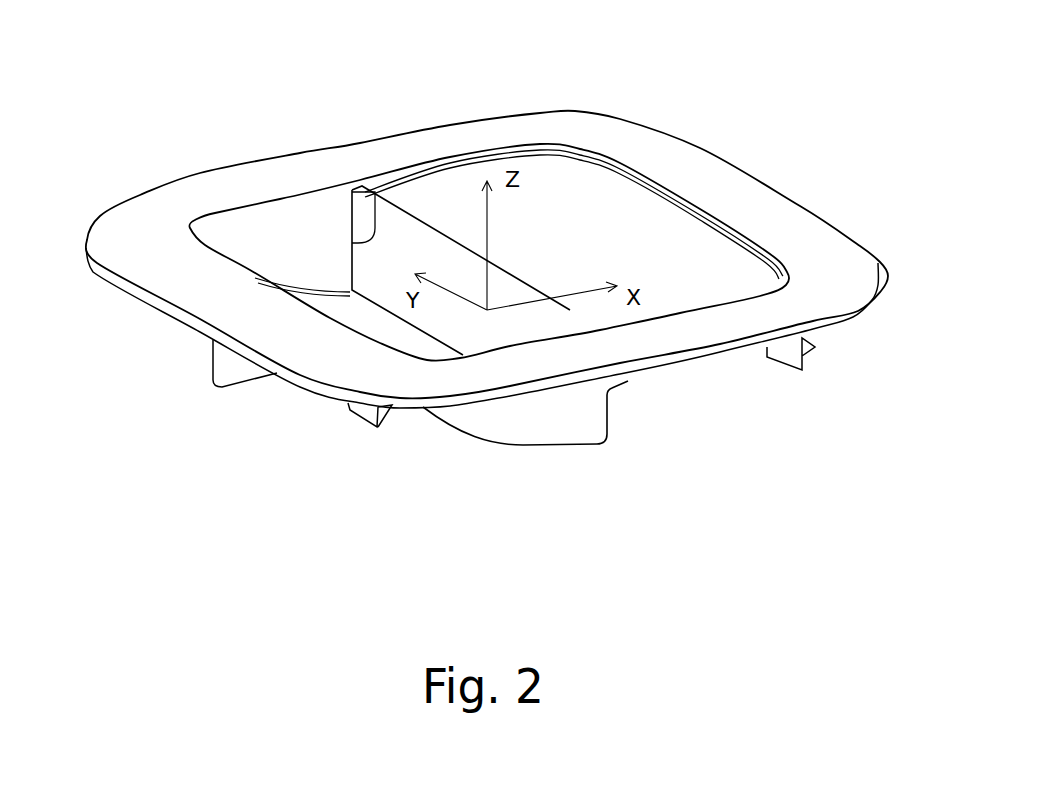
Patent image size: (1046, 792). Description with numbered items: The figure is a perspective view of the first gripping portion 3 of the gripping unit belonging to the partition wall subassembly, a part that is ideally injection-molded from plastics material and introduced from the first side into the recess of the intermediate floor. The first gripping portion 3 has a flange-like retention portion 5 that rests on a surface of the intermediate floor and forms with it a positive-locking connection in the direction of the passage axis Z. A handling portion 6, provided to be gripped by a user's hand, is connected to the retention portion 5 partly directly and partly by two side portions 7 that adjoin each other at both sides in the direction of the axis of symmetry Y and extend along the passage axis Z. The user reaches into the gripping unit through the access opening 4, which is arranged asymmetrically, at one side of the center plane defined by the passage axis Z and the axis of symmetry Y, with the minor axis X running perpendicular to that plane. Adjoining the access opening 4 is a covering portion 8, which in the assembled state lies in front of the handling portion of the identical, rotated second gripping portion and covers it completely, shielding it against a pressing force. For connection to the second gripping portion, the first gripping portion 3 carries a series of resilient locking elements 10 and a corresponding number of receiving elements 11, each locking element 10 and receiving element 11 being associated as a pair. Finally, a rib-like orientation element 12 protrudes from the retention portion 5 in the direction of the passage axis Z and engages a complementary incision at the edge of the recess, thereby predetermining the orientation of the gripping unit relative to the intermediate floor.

The first gripping portion 3 is at (295, 170).
The access opening 4 is at (333, 222).
The retention portion 5 is at (137, 217).
The handling portion 6 is at (378, 320).
The side portions 7 is at (293, 264).
The covering portion 8 is at (563, 207).
The locking element 10 is at (839, 340).
The receiving element 11 is at (368, 414).
The orientation element 12 is at (213, 360).